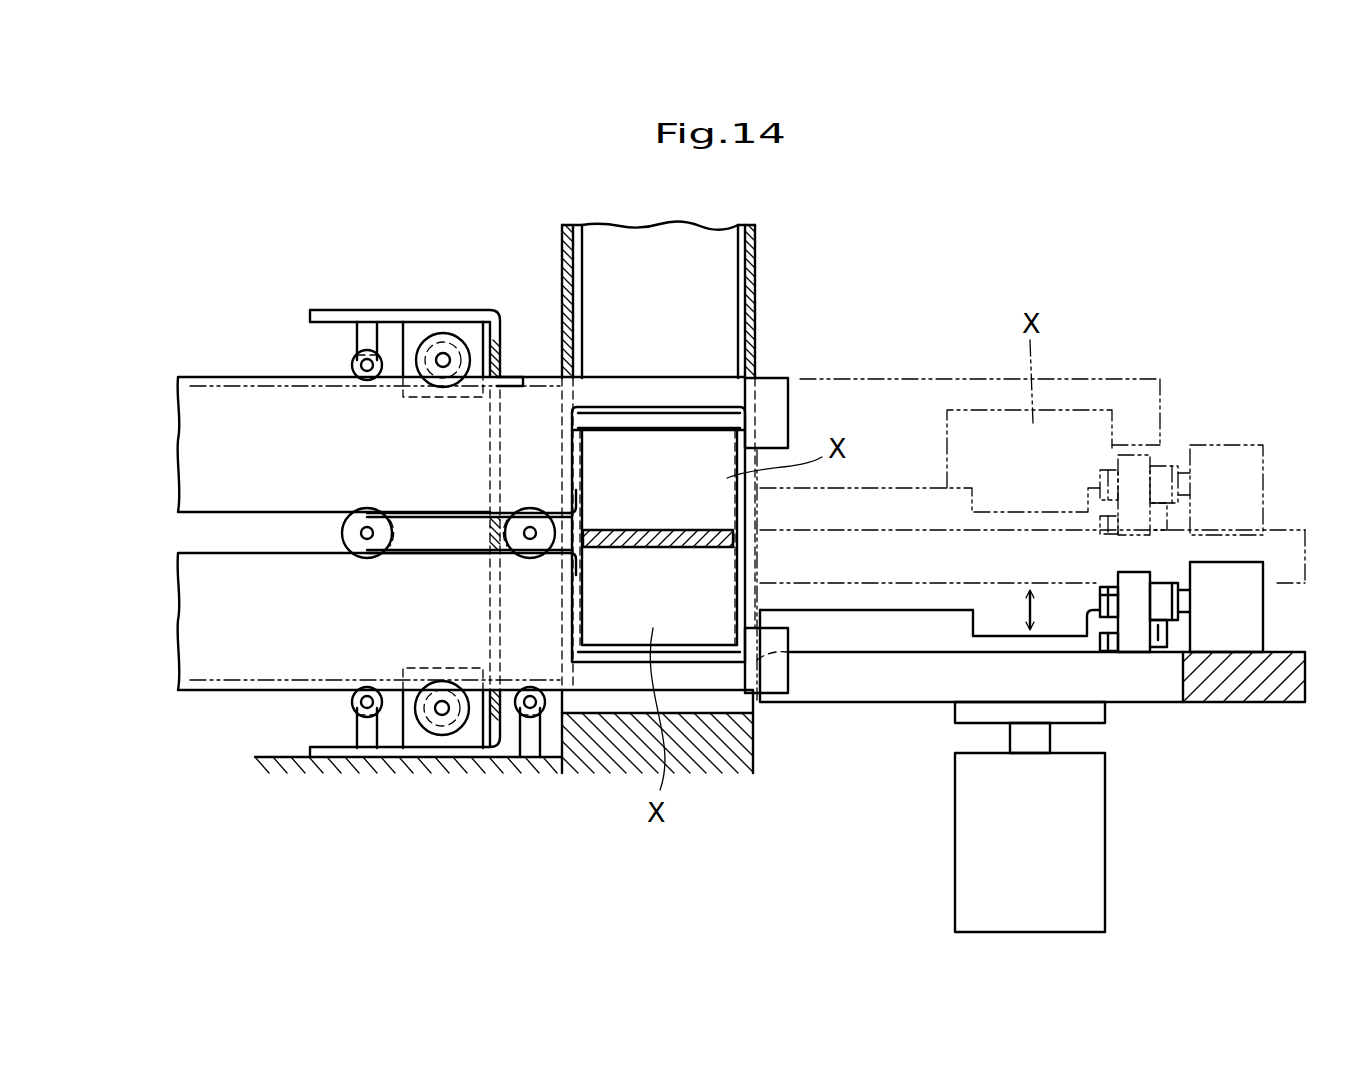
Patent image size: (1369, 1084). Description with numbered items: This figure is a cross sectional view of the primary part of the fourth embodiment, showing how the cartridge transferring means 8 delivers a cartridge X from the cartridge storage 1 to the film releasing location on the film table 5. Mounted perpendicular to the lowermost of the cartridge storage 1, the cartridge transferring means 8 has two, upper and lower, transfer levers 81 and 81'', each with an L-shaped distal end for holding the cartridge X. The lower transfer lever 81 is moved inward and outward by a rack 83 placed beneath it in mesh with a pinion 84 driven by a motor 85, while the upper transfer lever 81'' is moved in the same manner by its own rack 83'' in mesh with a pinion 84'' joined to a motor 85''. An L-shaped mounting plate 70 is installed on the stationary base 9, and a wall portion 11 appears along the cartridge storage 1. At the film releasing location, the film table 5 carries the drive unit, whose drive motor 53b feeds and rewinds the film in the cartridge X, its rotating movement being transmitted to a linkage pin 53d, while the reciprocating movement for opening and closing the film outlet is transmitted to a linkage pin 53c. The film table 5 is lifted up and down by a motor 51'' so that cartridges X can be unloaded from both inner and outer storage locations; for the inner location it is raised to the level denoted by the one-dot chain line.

The cartridge storage 1 is at (566, 218).
The film table 5 is at (1273, 690).
The cartridge transferring means 8 is at (168, 362).
The stationary base 9 is at (735, 752).
The column wall 11 is at (752, 308).
The motor 51'' is at (1071, 817).
The drive motor 53b is at (1245, 613).
The linkage pin 53c is at (1108, 650).
The linkage pin 53d is at (1095, 650).
The L-shaped mounting plate 70 is at (370, 317).
The transfer lever 81 is at (331, 621).
The transfer lever 81'' is at (424, 444).
The rack 83 is at (382, 729).
The rack 83'' is at (365, 334).
The pinion 84 is at (405, 753).
The pinion 84'' is at (463, 306).
The motor 85 is at (448, 762).
The motor 85'' is at (409, 298).